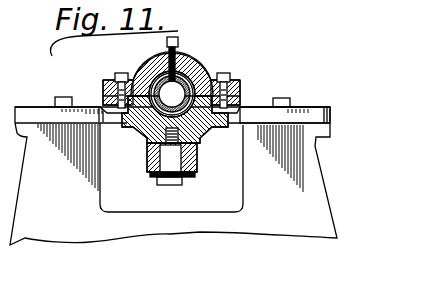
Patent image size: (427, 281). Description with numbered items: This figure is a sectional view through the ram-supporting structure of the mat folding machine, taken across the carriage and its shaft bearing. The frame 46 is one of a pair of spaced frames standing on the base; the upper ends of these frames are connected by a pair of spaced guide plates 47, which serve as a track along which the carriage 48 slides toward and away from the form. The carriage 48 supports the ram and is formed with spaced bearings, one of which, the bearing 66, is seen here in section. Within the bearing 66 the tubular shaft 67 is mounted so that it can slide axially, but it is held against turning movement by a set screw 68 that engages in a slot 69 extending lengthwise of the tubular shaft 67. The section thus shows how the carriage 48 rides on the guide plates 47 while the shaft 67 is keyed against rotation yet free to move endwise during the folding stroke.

The frame 46 is at (338, 237).
The guide plates 47 is at (333, 112).
The carriage 48 is at (204, 128).
The bearing 66 is at (203, 68).
The tubular shaft 67 is at (225, 80).
The set screws 68 is at (177, 43).
The slots 69 is at (143, 76).